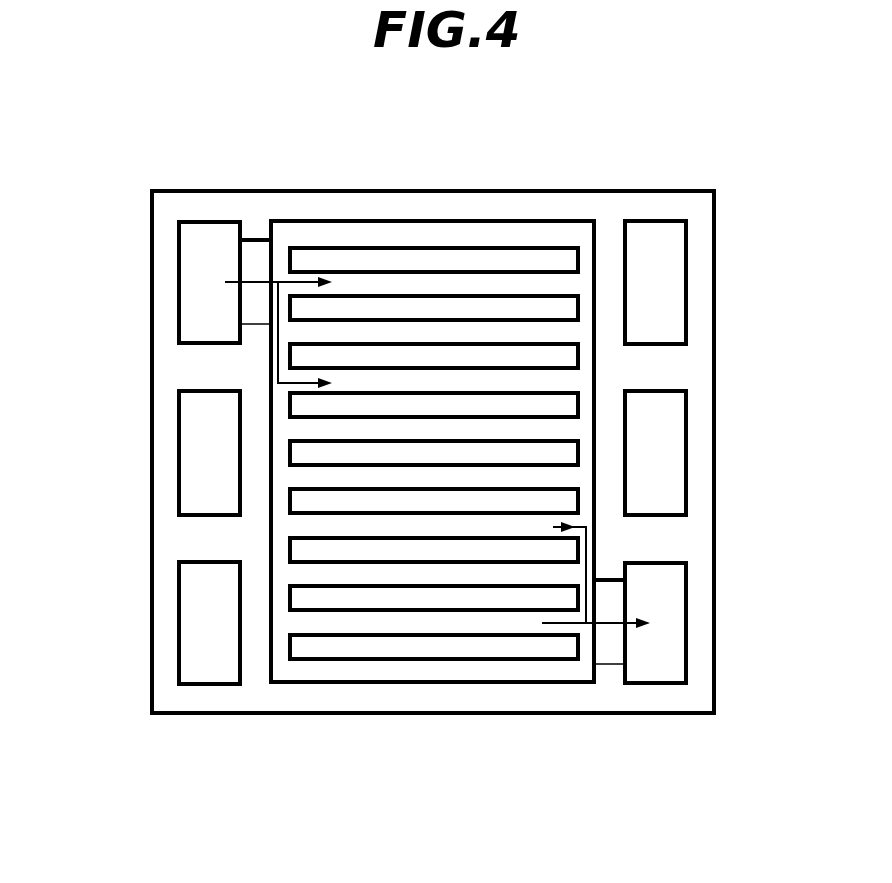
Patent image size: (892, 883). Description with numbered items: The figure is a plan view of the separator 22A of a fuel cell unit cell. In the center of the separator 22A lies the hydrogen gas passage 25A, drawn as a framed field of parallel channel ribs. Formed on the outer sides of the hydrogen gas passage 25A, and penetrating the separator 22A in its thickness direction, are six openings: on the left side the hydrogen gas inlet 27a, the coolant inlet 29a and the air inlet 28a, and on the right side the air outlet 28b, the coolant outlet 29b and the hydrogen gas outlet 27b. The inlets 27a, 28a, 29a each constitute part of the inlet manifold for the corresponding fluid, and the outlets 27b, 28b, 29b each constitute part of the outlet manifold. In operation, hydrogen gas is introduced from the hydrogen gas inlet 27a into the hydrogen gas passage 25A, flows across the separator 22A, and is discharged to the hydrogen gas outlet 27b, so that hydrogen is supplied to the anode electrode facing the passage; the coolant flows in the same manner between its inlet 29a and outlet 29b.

The separator 22A is at (654, 182).
The hydrogen gas passage 25A is at (522, 620).
The hydrogen gas inlet 27a is at (193, 266).
The hydrogen gas outlet 27b is at (673, 618).
The air inlet 28a is at (193, 608).
The air outlet 28b is at (673, 298).
The coolant inlet 29a is at (193, 438).
The coolant outlet 29b is at (673, 458).